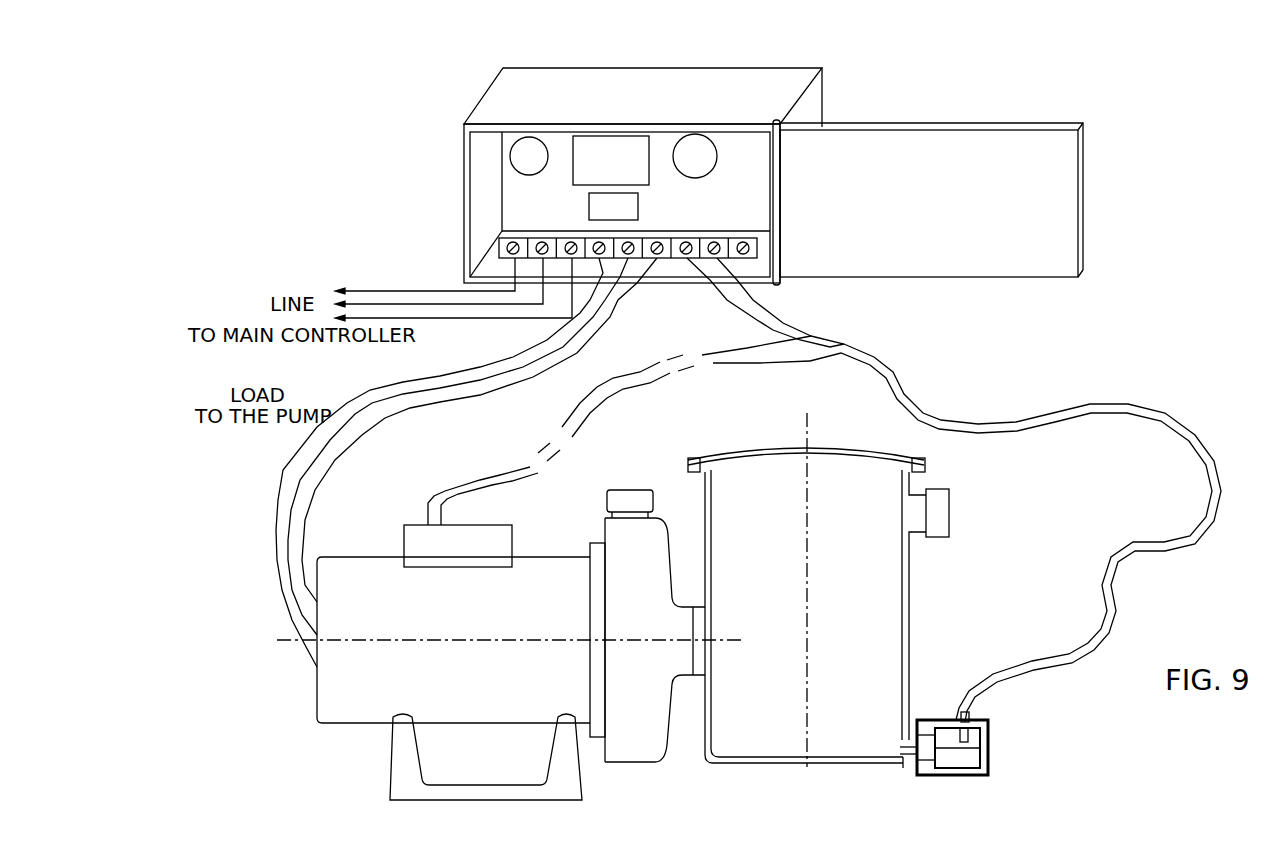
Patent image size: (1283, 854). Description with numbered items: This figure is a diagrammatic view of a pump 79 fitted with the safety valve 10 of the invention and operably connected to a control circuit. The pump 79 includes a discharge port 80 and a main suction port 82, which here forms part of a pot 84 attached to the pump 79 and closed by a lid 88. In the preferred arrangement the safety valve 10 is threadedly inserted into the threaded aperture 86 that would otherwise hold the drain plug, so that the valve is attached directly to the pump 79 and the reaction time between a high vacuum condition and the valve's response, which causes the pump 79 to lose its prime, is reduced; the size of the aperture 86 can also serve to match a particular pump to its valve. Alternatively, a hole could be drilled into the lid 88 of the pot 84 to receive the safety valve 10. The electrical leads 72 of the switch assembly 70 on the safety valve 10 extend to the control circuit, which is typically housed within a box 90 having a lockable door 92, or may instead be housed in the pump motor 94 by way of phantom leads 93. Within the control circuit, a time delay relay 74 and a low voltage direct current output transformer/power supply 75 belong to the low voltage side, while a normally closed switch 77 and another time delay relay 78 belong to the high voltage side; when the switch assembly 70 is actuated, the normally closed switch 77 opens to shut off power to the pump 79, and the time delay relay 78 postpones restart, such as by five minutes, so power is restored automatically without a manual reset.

The safety valve 10 is at (1002, 730).
The switch assembly 70 is at (962, 722).
The electrical leads 72 is at (954, 490).
The time delay relay 74 is at (529, 156).
The low voltage direct current output transformer/power supply 75 is at (611, 160).
The normally closed switch 77 is at (613, 206).
The time delay relay 78 is at (695, 156).
The pump 79 is at (425, 462).
The discharge port 80 is at (627, 497).
The main suction port 82 is at (940, 517).
The pot 84 is at (909, 624).
The threaded aperture 86 is at (905, 765).
The lid 88 is at (867, 452).
The box 90 is at (798, 82).
The lockable door 92 is at (1048, 208).
The phantom leads 93 is at (628, 377).
The pump motor 94 is at (388, 557).